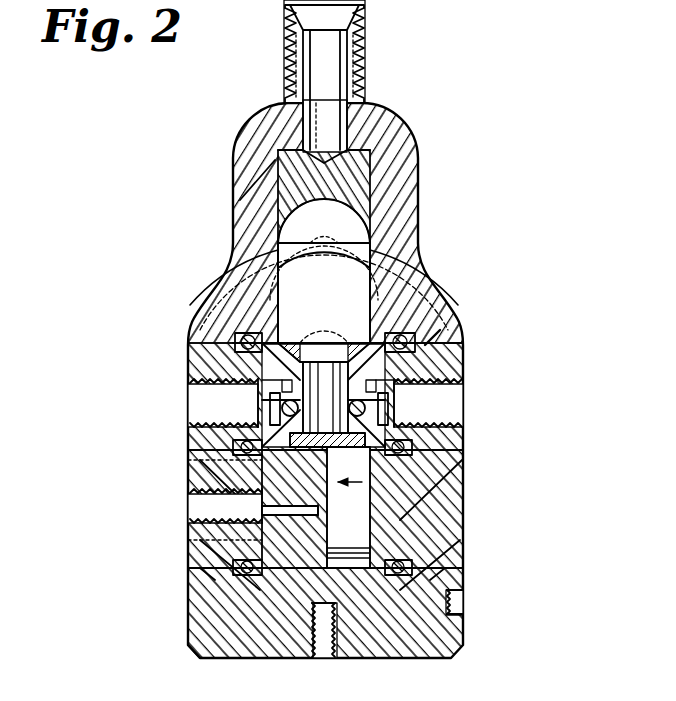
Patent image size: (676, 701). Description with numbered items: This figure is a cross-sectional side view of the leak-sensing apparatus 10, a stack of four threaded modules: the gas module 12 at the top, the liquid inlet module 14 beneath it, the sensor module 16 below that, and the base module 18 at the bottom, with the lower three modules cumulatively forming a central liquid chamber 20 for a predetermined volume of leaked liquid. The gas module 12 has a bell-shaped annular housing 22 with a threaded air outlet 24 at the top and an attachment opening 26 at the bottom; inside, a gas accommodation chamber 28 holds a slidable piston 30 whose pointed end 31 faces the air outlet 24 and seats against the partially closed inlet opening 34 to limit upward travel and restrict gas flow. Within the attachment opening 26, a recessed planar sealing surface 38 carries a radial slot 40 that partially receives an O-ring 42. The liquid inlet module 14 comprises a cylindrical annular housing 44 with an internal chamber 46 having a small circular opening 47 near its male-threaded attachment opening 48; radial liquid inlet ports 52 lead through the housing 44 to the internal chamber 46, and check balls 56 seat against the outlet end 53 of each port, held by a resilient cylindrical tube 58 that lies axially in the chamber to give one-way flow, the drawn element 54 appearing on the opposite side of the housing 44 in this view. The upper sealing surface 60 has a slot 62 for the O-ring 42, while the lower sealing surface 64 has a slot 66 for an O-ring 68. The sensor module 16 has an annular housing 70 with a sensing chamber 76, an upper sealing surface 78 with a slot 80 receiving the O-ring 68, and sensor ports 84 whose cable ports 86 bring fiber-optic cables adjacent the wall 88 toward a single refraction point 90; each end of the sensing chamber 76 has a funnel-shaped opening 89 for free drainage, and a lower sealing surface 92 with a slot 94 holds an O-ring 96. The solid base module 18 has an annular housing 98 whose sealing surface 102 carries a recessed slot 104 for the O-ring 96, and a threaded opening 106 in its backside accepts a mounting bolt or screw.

The apparatus 10 is at (408, 78).
The gas module 12 is at (336, 381).
The liquid inlet module 14 is at (470, 442).
The sensor module 16 is at (467, 512).
The base module 18 is at (467, 633).
The central liquid chamber 20 is at (466, 494).
The annular housing 22 is at (234, 222).
The air outlet 24 is at (335, 48).
The attachment opening 26 is at (222, 352).
The gas accommodation chamber 28 is at (352, 246).
The piston 30 is at (355, 168).
The pointed end 31 is at (372, 126).
The inlet opening 34 is at (276, 174).
The sealing surface 38 is at (445, 376).
The slot 40 is at (440, 322).
The O-ring 42 is at (252, 320).
The annular housing 44 is at (246, 470).
The internal chamber 46 is at (440, 392).
The circular opening 47 is at (322, 262).
The attachment opening 48 is at (436, 340).
The liquid inlet ports 52 is at (256, 398).
The outlet end 53 is at (244, 441).
The right threaded port 54 is at (428, 403).
The check balls 56 is at (248, 420).
The cylindrical tube 58 is at (440, 282).
The sealing surface 60 is at (256, 375).
The slot 62 is at (440, 362).
The sealing surface 64 is at (256, 495).
The slot 66 is at (455, 462).
The O-ring 68 is at (246, 483).
The annular housing 70 is at (242, 535).
The sensing chamber 76 is at (456, 550).
The sealing surface 78 is at (240, 460).
The slot 80 is at (470, 478).
The sensor ports 84 is at (250, 512).
The cable port 86 is at (256, 555).
The wall 88 is at (456, 530).
The funnel-shaped opening 89 is at (216, 570).
The refraction point 90 is at (456, 557).
The sealing surface 92 is at (456, 584).
The slot 94 is at (455, 574).
The O-ring 96 is at (236, 602).
The annular housing 98 is at (190, 628).
The sealing surface 102 is at (272, 658).
The recessed slot 104 is at (456, 601).
The threaded opening 106 is at (336, 656).